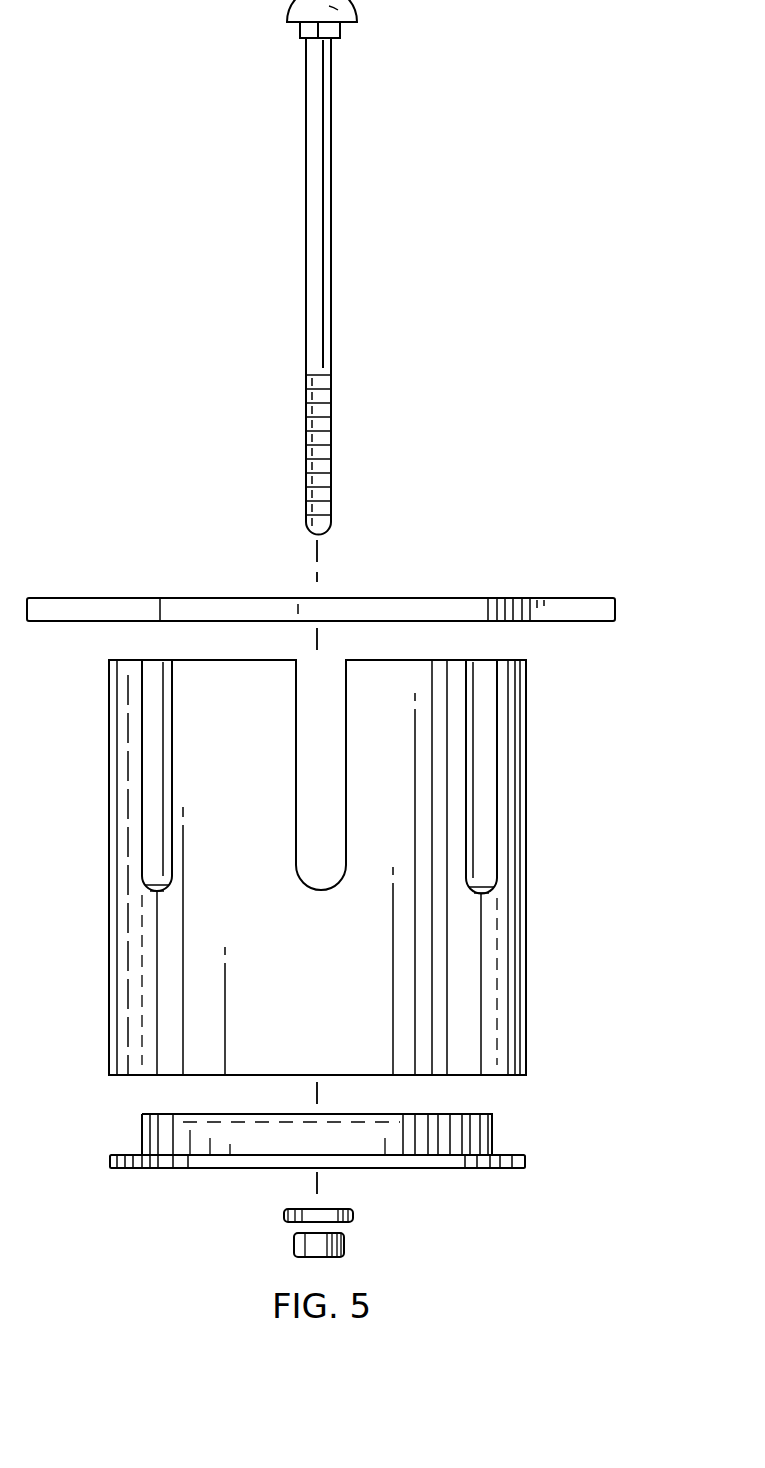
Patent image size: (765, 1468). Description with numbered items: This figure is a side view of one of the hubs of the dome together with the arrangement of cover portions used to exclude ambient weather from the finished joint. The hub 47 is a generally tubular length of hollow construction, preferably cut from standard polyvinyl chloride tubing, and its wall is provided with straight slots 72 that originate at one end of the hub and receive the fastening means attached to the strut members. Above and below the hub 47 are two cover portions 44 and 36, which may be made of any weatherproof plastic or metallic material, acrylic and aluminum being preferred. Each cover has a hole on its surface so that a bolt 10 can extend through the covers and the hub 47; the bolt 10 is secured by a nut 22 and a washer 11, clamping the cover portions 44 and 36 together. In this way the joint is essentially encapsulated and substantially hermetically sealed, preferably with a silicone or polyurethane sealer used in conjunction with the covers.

The bolt 10 is at (333, 153).
The cover portion 44 is at (530, 598).
The hub 47 is at (374, 867).
The straight slot 72 is at (485, 744).
The cover portion 36 is at (525, 1160).
The washer 11 is at (354, 1215).
The nut 22 is at (345, 1247).